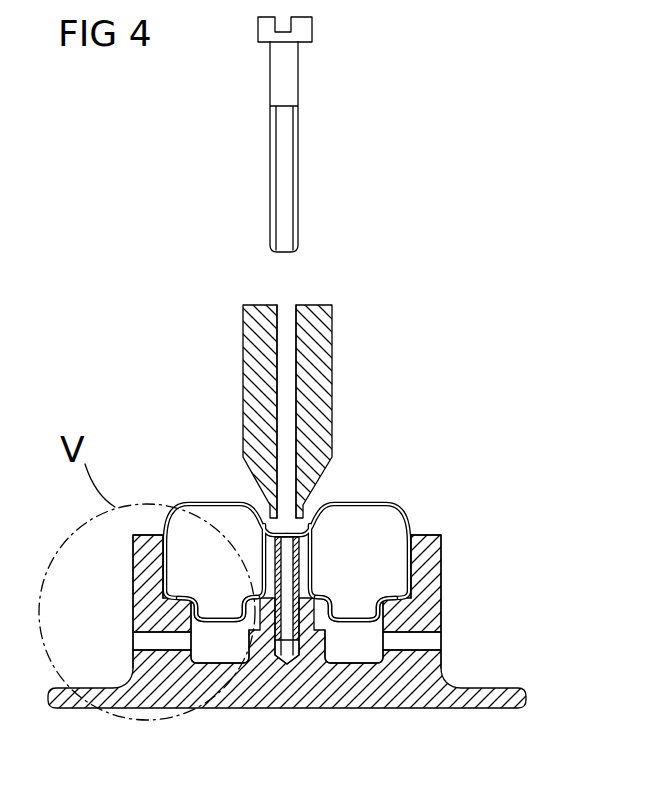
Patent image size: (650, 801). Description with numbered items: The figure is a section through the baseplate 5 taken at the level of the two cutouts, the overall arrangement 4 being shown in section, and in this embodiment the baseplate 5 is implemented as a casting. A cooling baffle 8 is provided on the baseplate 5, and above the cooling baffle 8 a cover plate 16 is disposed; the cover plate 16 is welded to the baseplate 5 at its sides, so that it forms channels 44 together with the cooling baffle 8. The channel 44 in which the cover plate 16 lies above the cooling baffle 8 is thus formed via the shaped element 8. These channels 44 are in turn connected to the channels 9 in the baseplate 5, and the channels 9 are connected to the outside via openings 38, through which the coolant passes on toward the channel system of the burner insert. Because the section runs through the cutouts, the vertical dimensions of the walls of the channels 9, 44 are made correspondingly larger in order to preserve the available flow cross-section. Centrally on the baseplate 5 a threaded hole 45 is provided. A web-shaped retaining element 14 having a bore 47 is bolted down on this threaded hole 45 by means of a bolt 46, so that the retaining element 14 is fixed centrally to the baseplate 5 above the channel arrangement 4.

The brush holder arrangement 4 is at (460, 357).
The baseplate 5 is at (462, 706).
The cooling baffle 8 is at (214, 614).
The channels 9 is at (222, 652).
The web-shaped retaining element 14 is at (316, 379).
The cover plate 16 is at (211, 500).
The openings 38 is at (138, 641).
The channels 44 is at (183, 556).
The threaded hole 45 is at (288, 666).
The bolt 46 is at (293, 83).
The bore 47 is at (282, 312).